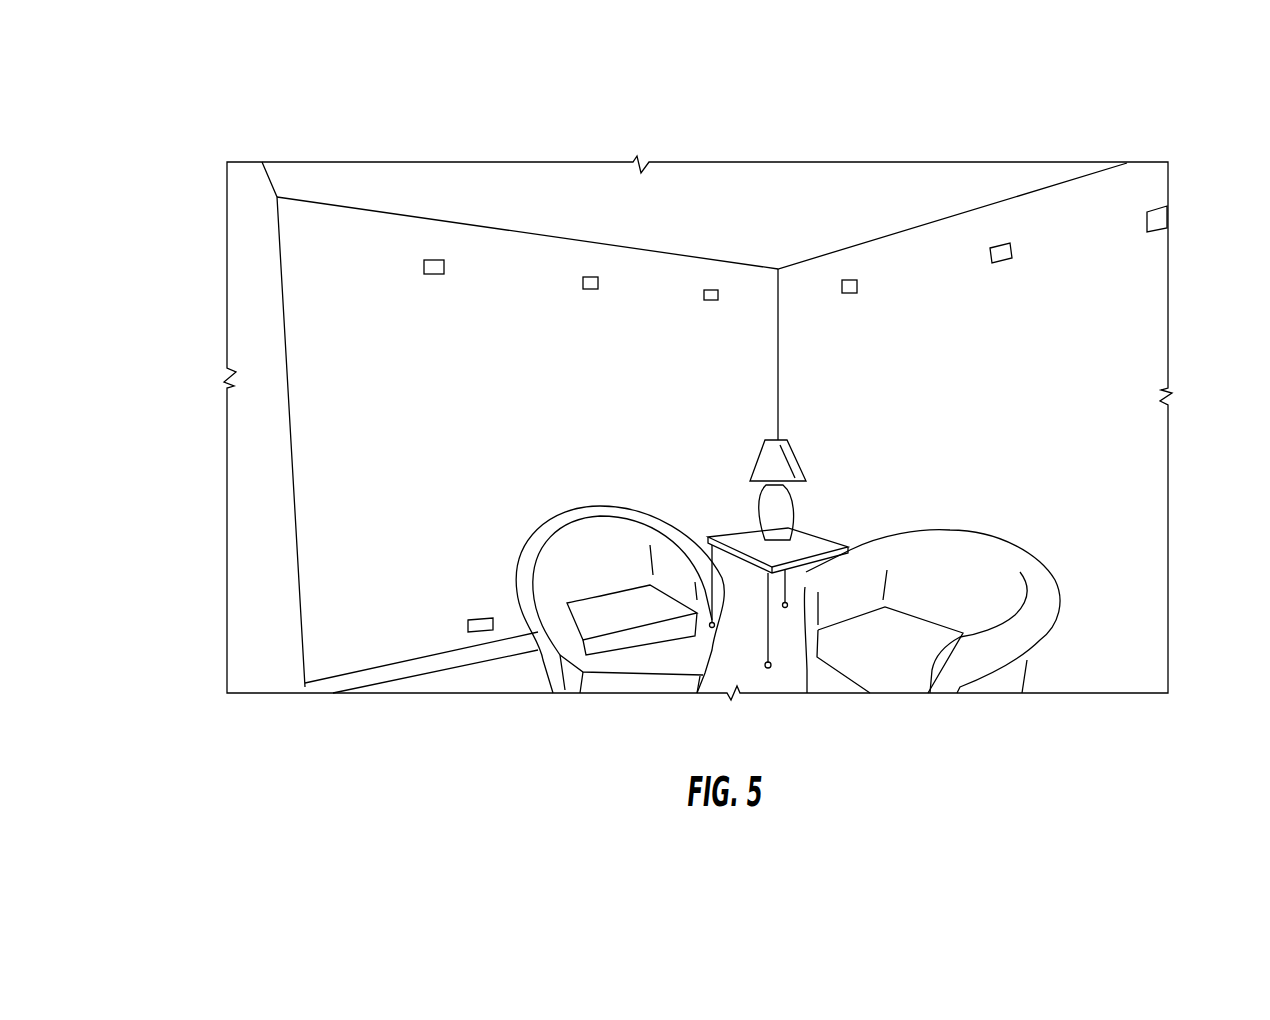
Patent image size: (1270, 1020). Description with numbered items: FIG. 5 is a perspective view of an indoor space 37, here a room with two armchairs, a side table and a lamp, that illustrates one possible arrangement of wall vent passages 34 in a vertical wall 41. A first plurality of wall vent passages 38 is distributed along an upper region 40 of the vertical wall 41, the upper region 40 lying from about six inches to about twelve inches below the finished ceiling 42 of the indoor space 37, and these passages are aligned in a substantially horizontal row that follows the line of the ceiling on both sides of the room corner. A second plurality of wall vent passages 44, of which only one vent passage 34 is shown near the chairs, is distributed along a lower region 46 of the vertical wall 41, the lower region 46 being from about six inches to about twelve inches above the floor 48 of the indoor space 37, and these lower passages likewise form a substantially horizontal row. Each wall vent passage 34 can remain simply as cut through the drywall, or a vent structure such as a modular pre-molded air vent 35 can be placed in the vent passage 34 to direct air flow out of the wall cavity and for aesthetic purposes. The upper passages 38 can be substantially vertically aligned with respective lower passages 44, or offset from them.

The wall vent passage 34 is at (710, 290).
The modular pre-molded air vent 35 is at (492, 628).
The indoor space 37 is at (378, 478).
The first plurality of wall vent passages 38 is at (408, 267).
The upper region 40 is at (401, 286).
The vertical wall 41 is at (398, 398).
The finished ceiling 42 is at (746, 182).
The second plurality of wall vent passages 44 is at (455, 628).
The lower region 46 is at (352, 606).
The floor 48 is at (492, 677).